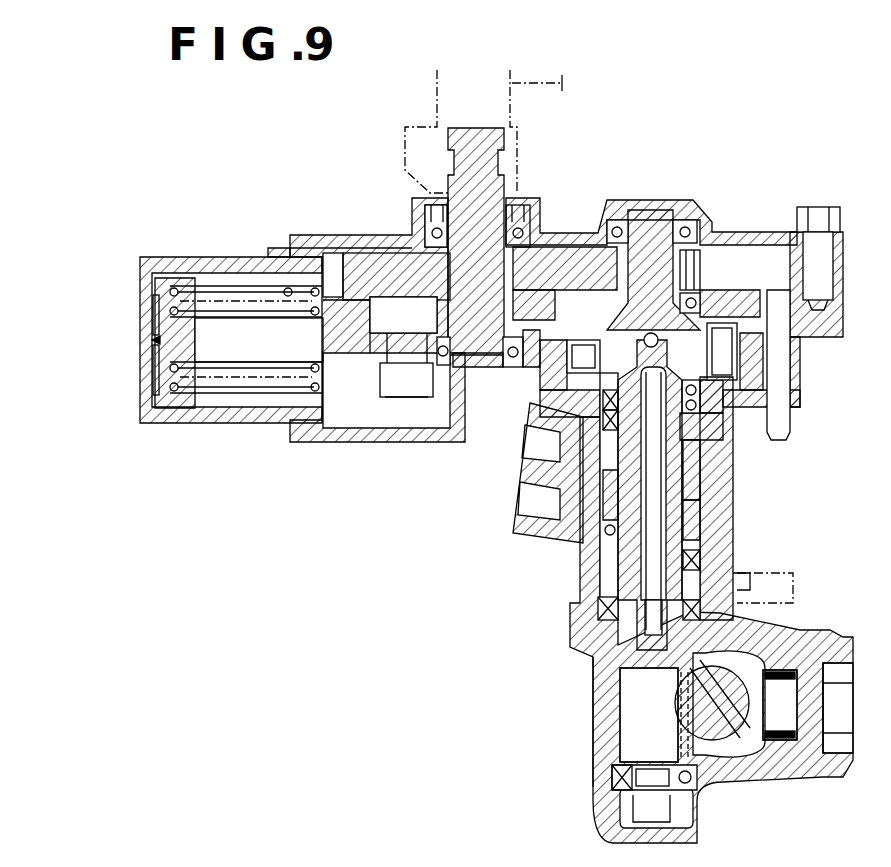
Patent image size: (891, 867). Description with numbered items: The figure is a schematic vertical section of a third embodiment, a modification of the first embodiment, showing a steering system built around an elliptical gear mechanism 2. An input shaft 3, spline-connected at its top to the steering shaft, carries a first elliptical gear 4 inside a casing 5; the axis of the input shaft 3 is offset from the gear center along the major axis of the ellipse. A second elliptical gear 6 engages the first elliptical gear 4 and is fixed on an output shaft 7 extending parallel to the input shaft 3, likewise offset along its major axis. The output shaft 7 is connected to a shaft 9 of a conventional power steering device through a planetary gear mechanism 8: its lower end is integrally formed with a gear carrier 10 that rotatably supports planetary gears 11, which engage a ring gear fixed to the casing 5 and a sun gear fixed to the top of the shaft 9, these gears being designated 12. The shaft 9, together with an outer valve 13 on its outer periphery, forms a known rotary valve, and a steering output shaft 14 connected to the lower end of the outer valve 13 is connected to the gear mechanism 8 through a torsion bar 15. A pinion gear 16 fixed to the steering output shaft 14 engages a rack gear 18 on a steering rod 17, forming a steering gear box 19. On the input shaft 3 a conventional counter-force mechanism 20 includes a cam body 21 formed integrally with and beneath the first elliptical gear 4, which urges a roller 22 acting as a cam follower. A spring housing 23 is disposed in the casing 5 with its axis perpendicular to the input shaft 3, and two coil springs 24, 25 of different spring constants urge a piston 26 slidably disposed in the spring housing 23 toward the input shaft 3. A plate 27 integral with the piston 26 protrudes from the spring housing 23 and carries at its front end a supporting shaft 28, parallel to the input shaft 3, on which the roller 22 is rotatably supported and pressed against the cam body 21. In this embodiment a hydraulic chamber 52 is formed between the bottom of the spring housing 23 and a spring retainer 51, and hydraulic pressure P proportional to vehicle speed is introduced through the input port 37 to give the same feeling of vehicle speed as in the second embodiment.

The elliptical gear mechanism 2 is at (708, 272).
The input shaft 3 is at (455, 160).
The first elliptical gear 4 is at (402, 257).
The casing 5 is at (700, 195).
The second elliptical gear 6 is at (575, 268).
The output shaft 7 is at (652, 232).
The planetary gear mechanism 8 is at (818, 360).
The shaft 9 is at (685, 463).
The gear carrier 10 is at (797, 330).
The planetary gears 11 is at (548, 385).
The ring gear and sun gear 12 is at (762, 400).
The outer valve 13 is at (715, 534).
The steering output shaft 14 is at (590, 649).
The torsion bar 15 is at (700, 555).
The pinion gear 16 is at (640, 730).
The steering rod 17 is at (770, 768).
The rack gear 18 is at (722, 762).
The steering gear box 19 is at (590, 705).
The counter-force mechanism 20 is at (362, 400).
The cam body 21 is at (548, 300).
The roller 22 is at (346, 246).
The spring housing 23 is at (166, 424).
The coil spring 24 is at (178, 408).
The coil spring 25 is at (185, 296).
The piston 26 is at (255, 412).
The plate 27 is at (357, 347).
The supporting shaft 28 is at (405, 362).
The input port 37 is at (152, 345).
The spring retainer 51 is at (152, 398).
The hydraulic chamber 52 is at (152, 332).
The pressure port P is at (150, 340).